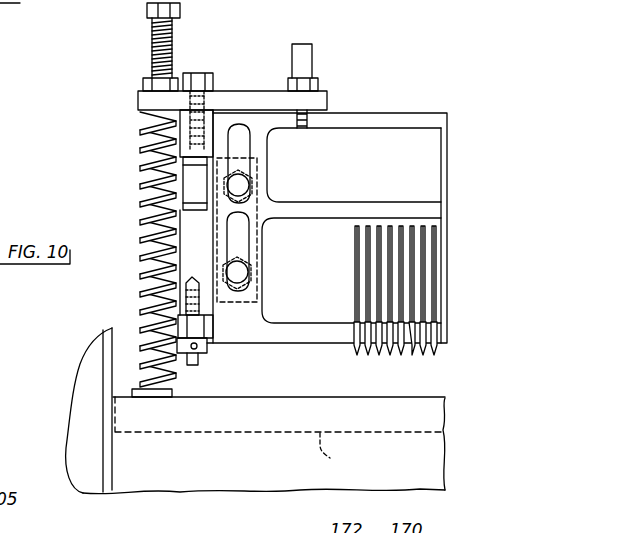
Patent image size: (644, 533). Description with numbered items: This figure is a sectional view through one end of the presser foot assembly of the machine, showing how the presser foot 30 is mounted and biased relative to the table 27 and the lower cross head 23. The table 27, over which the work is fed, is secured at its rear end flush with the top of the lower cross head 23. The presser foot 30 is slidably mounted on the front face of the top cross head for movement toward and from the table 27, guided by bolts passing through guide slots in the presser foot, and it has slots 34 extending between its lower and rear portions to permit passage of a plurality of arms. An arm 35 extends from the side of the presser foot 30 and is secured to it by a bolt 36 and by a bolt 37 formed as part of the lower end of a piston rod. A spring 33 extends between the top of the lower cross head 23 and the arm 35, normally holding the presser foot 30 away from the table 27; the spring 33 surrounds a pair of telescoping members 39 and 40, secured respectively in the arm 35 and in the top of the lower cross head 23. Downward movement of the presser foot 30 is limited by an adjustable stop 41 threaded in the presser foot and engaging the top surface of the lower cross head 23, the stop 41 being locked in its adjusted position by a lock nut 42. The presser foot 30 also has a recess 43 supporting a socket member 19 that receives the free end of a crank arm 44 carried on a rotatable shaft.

The socket member 19 is at (217, 162).
The lower cross head 23 is at (177, 468).
The table 27 is at (333, 456).
The presser foot 30 is at (300, 345).
The springs 33 is at (140, 133).
The slots 34 is at (418, 226).
The arm 35 is at (140, 98).
The bolt 36 is at (208, 75).
The bolt 37 is at (314, 85).
The telescoping member 39 is at (143, 168).
The telescoping member 40 is at (140, 307).
The adjustable stop 41 is at (196, 354).
The lock nut 42 is at (206, 330).
The recess 43 is at (202, 212).
The crank arm 44 is at (185, 196).